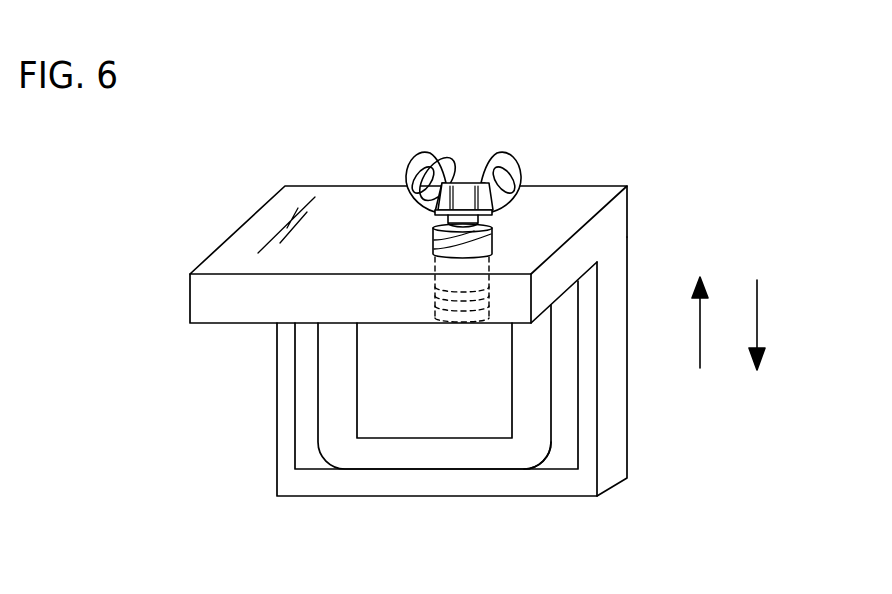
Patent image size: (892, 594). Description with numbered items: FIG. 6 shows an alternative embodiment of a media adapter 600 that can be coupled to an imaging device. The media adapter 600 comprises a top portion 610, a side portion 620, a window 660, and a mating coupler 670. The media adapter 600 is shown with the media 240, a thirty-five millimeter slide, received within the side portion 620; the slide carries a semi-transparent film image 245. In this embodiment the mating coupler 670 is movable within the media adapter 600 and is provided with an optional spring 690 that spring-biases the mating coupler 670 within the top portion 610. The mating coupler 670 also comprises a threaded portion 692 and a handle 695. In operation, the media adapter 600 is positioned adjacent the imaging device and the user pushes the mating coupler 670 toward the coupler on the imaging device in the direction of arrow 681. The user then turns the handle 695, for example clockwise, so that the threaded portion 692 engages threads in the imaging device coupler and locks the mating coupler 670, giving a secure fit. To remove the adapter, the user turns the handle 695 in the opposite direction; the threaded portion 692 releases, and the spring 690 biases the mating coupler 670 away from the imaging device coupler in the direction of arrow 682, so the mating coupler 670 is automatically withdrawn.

The media adapter 600 is at (668, 162).
The top portion 610 is at (188, 305).
The side portion 620 is at (382, 496).
The media 240 is at (318, 414).
The semi-transparent film image 245 is at (457, 395).
The window 660 is at (537, 469).
The mating coupler 670 is at (469, 232).
The handle 695 is at (524, 166).
The threaded portion 692 is at (490, 236).
The spring 690 is at (455, 298).
The arrow 681 is at (757, 318).
The arrow 682 is at (700, 320).